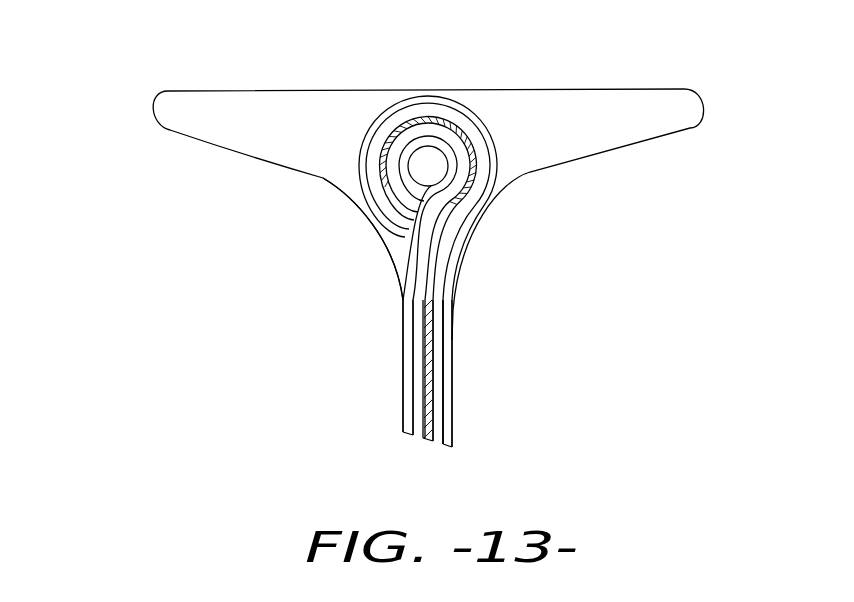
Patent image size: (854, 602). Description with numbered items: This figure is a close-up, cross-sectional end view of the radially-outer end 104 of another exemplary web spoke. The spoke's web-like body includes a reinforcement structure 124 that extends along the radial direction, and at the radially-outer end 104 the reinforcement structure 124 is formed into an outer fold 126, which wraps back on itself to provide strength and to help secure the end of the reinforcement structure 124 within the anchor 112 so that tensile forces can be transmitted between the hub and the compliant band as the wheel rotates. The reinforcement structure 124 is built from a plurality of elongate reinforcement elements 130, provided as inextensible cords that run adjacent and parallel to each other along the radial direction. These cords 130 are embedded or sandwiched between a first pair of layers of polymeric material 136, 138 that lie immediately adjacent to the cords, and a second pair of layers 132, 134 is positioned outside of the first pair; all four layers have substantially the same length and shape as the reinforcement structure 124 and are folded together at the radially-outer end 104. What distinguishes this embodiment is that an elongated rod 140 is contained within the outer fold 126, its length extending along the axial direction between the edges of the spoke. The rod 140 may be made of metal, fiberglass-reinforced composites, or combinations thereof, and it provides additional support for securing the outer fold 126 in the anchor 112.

The radially-outer end 104 is at (123, 108).
The anchor 112 is at (648, 120).
The reinforcement structure 124 is at (418, 453).
The outer fold 126 is at (352, 135).
The reinforcement elements 130 is at (437, 308).
The layer of polymeric material 132 is at (403, 362).
The layer of polymeric material 134 is at (452, 410).
The layer of polymeric material 136 is at (400, 292).
The layer of polymeric material 138 is at (442, 362).
The elongated rod 140 is at (423, 162).